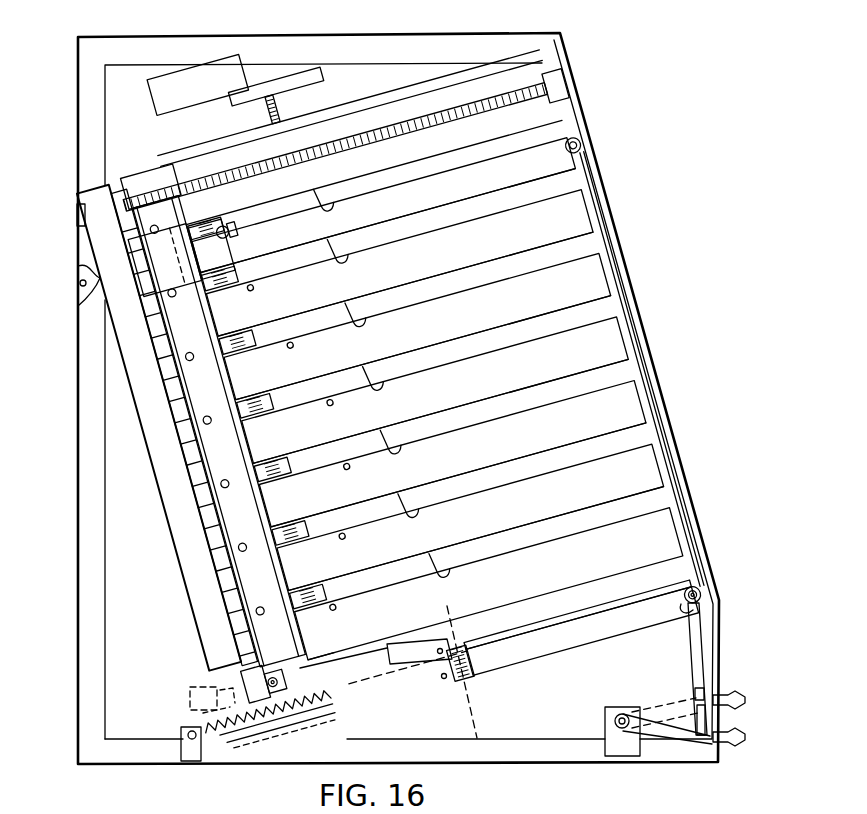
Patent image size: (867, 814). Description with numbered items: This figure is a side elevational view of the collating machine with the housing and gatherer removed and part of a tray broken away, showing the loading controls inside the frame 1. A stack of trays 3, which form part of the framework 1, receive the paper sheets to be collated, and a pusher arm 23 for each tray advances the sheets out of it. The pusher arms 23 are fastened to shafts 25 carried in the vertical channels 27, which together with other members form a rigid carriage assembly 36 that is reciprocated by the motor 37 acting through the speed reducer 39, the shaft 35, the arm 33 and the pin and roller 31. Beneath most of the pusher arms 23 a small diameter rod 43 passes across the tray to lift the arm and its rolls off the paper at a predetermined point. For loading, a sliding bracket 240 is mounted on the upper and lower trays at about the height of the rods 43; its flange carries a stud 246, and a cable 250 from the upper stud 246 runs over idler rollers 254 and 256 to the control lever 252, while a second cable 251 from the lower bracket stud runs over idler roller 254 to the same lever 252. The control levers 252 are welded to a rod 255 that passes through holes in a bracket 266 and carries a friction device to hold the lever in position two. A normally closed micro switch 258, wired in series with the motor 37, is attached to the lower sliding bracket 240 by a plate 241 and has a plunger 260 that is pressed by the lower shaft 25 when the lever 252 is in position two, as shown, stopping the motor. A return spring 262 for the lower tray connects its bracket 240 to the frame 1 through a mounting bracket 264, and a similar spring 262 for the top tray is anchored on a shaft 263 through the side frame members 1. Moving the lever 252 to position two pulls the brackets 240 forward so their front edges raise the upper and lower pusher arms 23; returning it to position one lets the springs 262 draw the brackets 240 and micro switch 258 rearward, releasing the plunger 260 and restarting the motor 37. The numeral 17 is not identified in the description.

The framework 1 is at (525, 753).
The trays 3 is at (437, 201).
The angle of inclination 17 is at (446, 609).
The pusher arms 23 is at (322, 200).
The shafts 25 is at (155, 227).
The vertical channels 27 is at (246, 589).
The pin and roller 31 is at (140, 181).
The arm 33 is at (230, 143).
The shaft 35 is at (281, 104).
The carriage assembly 36 is at (283, 152).
The motor 37 is at (192, 78).
The speed reducer 39 is at (258, 88).
The rod 43 is at (254, 288).
The sliding bracket 240 is at (236, 214).
The plate 241 is at (210, 712).
The stud 246 is at (242, 237).
The cable 250 is at (600, 208).
The second cable 251 is at (592, 624).
The control lever 252 is at (748, 736).
The idler roller 254 is at (704, 598).
The rod 255 is at (626, 714).
The idler roller 256 is at (582, 140).
The micro switch 258 is at (248, 674).
The plunger 260 is at (273, 677).
The return spring 262 is at (78, 268).
The shaft 263 is at (78, 304).
The mounting bracket 264 is at (181, 731).
The bracket 266 is at (605, 720).